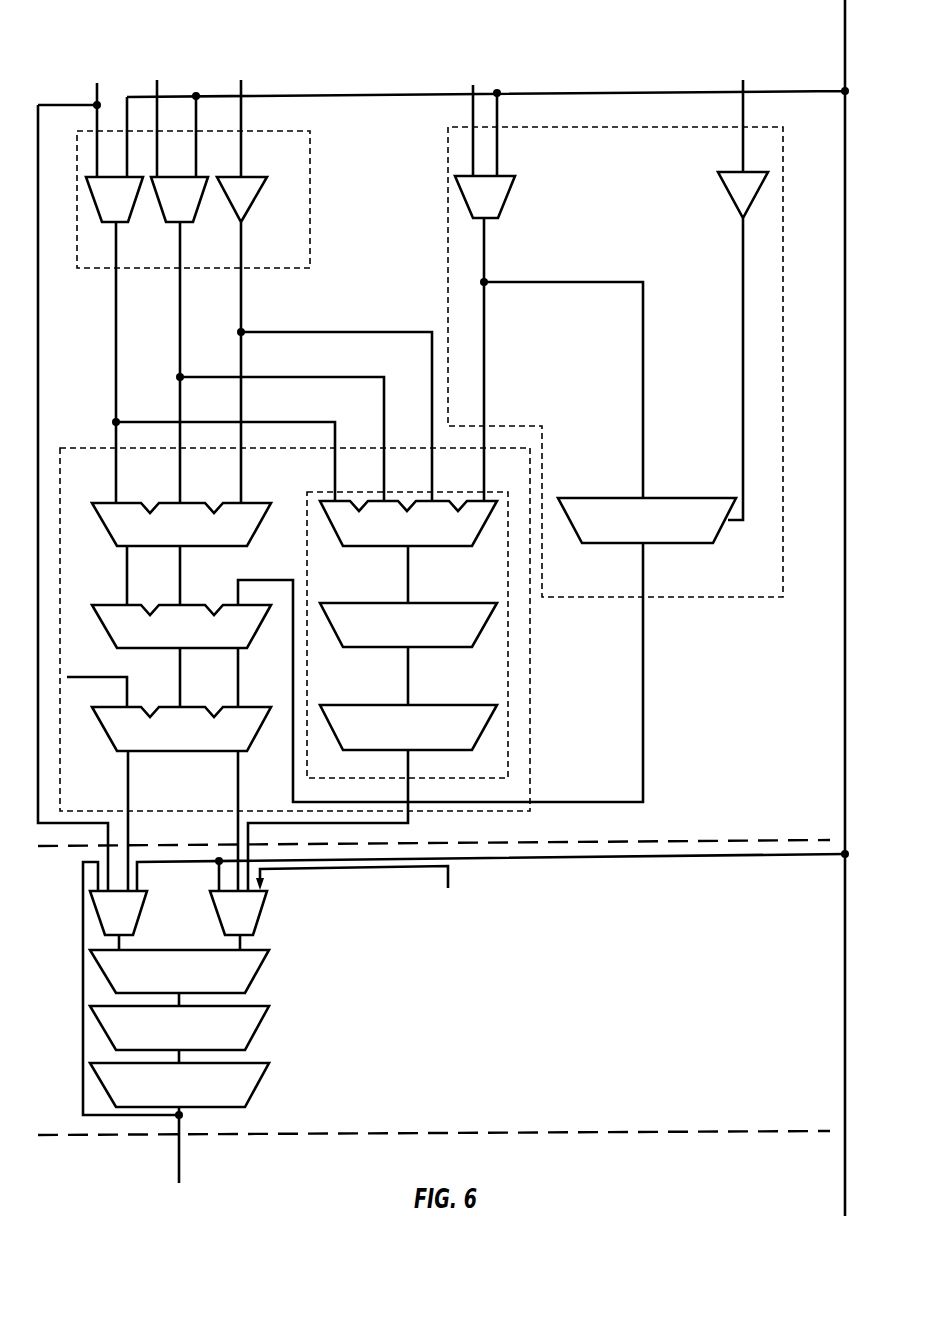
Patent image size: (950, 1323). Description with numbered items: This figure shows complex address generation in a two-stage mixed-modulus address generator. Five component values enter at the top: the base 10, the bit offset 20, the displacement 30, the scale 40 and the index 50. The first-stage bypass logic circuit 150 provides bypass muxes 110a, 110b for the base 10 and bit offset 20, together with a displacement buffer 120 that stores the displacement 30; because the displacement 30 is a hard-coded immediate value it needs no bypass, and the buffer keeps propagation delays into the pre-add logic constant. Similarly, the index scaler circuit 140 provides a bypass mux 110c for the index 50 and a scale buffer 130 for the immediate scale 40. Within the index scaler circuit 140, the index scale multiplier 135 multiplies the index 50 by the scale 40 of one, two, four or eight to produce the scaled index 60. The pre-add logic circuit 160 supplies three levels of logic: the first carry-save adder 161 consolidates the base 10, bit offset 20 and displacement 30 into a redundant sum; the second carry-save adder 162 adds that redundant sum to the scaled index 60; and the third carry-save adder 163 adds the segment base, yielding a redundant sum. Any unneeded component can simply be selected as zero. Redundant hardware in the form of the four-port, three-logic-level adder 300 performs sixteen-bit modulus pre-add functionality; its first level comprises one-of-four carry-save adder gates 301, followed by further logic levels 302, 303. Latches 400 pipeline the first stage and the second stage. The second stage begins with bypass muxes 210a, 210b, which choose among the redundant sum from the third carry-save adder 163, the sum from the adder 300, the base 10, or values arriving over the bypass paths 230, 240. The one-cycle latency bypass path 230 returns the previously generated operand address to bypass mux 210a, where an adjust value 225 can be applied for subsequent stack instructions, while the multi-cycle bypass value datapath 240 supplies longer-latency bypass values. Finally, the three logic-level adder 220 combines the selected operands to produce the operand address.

The base 10 is at (113, 52).
The bit offset 20 is at (178, 52).
The displacement 30 is at (335, 45).
The scale 40 is at (740, 45).
The index 50 is at (438, 45).
The scaled index 60 is at (646, 550).
The bypass mux 110a is at (118, 224).
The bypass mux 110b is at (183, 224).
The bypass mux 110c is at (508, 195).
The displacement buffer 120 is at (244, 227).
The scale buffer 130 is at (730, 193).
The index scale multiplier 135 is at (658, 497).
The index scaler circuit 140 is at (783, 153).
The first-stage bypass logic circuit 150 is at (310, 183).
The pre-add logic circuit 160 is at (520, 752).
The first carry-save adder 161 is at (244, 542).
The second carry-save adder 162 is at (244, 645).
The third carry-save adder 163 is at (244, 748).
The bypass mux 210a is at (140, 910).
The bypass mux 210b is at (260, 910).
The adder 220 is at (303, 1030).
The adjust signal 225 is at (493, 911).
The bypass path 230 is at (83, 985).
The multi-cycle bypass value datapath 240 is at (845, 1017).
The adder 300 is at (306, 538).
The carry-save adder gate 301 is at (471, 536).
The first latch 302 is at (471, 642).
The second latch 303 is at (471, 745).
The latches 400 is at (685, 837).